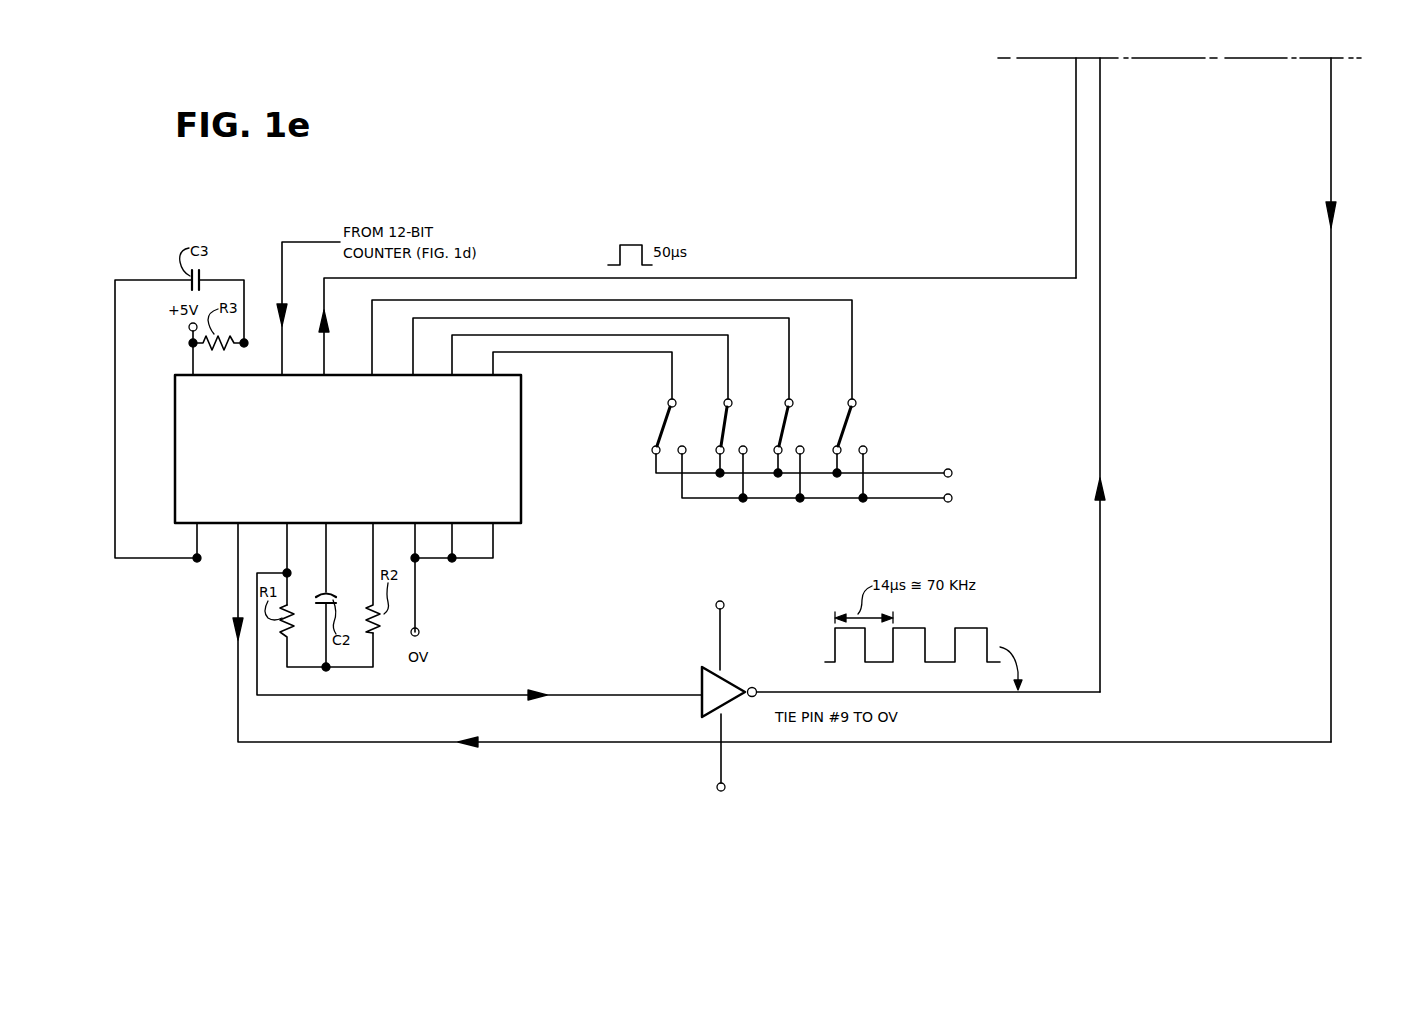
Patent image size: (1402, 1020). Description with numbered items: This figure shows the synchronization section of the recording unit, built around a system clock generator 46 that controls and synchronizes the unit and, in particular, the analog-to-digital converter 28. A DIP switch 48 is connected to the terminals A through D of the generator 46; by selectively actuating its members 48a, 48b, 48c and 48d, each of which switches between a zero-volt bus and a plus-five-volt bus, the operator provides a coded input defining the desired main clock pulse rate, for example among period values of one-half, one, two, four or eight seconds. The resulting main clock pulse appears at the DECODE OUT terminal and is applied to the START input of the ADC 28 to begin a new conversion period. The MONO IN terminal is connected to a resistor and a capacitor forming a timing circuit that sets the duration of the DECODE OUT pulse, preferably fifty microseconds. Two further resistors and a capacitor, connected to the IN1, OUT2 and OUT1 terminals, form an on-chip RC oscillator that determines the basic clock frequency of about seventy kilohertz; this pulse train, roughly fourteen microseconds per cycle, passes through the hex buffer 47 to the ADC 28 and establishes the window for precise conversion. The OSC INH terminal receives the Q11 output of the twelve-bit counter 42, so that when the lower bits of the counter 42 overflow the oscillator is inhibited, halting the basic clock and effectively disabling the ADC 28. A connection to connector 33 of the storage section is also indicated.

The system clock generator 46 is at (176, 396).
The hex buffer 47 is at (734, 684).
The DIP switch 48 is at (635, 478).
The switch member 48a is at (662, 427).
The switch member 48b is at (720, 430).
The switch member 48c is at (780, 430).
The switch member 48d is at (841, 432).
The analog-to-digital converter 28 is at (1123, 365).
The 12-bit addressing counter 42 is at (1284, 379).
The connector (connection) 33 is at (1260, 103).